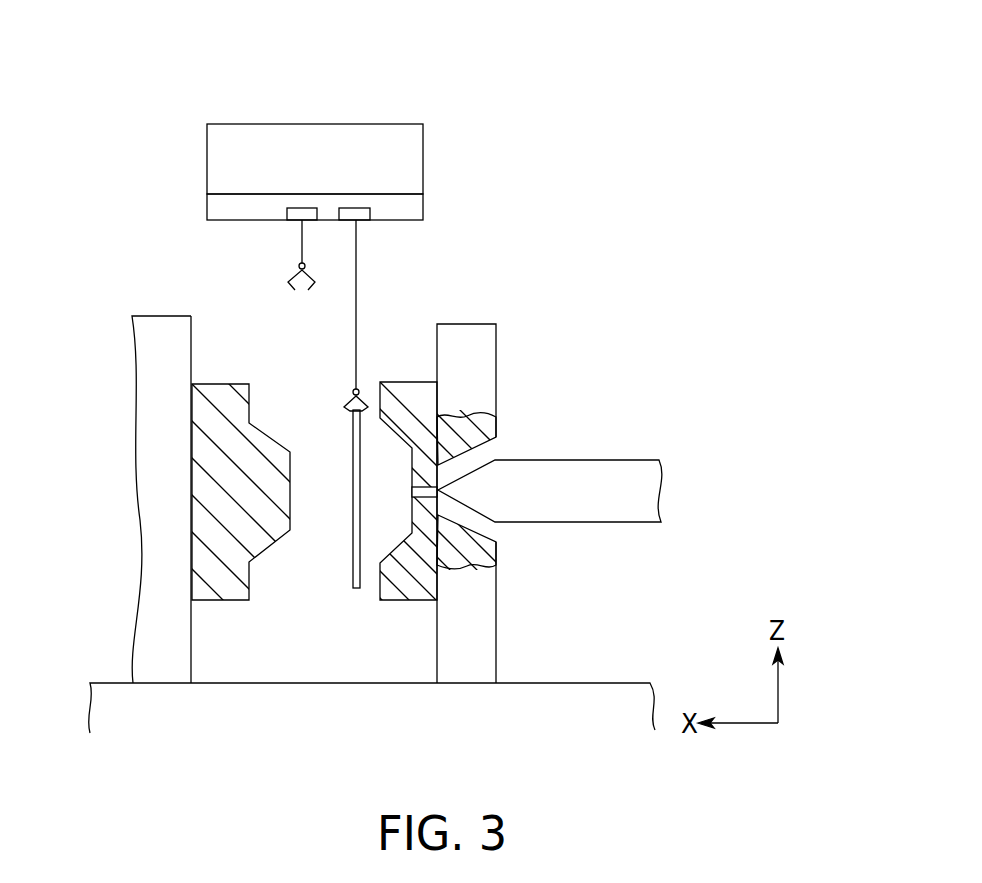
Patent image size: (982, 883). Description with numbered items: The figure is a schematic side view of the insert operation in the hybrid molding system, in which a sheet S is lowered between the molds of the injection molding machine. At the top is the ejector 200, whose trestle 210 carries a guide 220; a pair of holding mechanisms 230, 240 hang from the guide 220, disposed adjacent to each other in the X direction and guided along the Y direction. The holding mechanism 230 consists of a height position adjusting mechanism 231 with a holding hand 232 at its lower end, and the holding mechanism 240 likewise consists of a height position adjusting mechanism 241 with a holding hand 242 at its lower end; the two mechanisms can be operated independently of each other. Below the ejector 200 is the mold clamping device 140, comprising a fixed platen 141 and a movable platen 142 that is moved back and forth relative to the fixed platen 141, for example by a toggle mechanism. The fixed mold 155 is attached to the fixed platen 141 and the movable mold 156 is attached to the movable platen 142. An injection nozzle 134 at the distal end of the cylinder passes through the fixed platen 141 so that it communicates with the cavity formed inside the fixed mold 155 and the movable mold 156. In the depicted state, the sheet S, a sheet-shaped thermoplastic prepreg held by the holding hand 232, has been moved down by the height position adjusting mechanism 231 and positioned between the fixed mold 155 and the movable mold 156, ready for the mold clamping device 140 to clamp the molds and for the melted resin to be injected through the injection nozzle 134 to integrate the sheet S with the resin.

The ejector 200 is at (354, 136).
The trestle 210 is at (423, 163).
The guide 220 is at (423, 207).
The holding mechanism 230 is at (342, 230).
The height position adjusting mechanism 231 is at (363, 221).
The holding hand 232 is at (352, 393).
The holding mechanism 240 is at (281, 198).
The height position adjusting mechanism 241 is at (295, 221).
The holding hand 242 is at (315, 283).
The sheet S is at (350, 575).
The mold clamping device 140 is at (309, 524).
The fixed platen 141 is at (467, 670).
The movable platen 142 is at (165, 670).
The fixed mold 155 is at (407, 382).
The movable mold 156 is at (223, 384).
The injection nozzle 134 is at (573, 523).